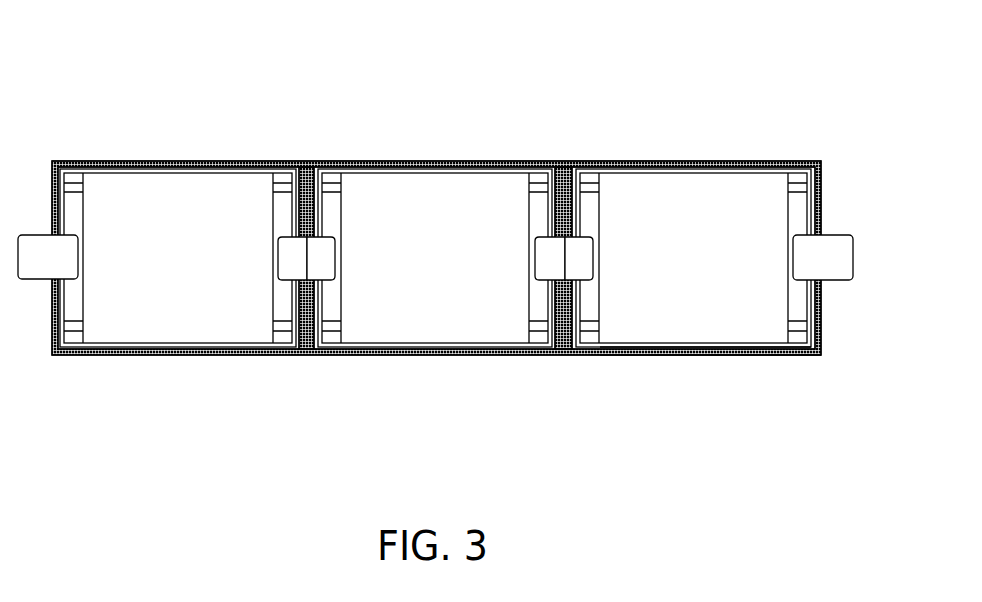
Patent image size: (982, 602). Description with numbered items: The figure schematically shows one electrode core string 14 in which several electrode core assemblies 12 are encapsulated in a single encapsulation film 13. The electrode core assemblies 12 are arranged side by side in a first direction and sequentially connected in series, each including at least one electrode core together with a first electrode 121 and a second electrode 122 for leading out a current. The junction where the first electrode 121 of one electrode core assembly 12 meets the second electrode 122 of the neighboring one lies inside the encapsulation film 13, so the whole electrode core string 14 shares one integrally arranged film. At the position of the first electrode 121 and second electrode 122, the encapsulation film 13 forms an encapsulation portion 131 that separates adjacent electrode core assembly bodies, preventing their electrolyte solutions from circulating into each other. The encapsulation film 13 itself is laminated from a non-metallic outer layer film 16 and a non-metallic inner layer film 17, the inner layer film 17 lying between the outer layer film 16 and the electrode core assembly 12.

The electrode core string 14 is at (108, 40).
The electrode core assembly 12 is at (150, 205).
The first electrode 121 is at (322, 253).
The second electrode 122 is at (288, 258).
The encapsulation film 13 is at (408, 350).
The encapsulation portion 131 is at (312, 348).
The outer layer film 16 is at (785, 348).
The inner layer film 17 is at (657, 348).